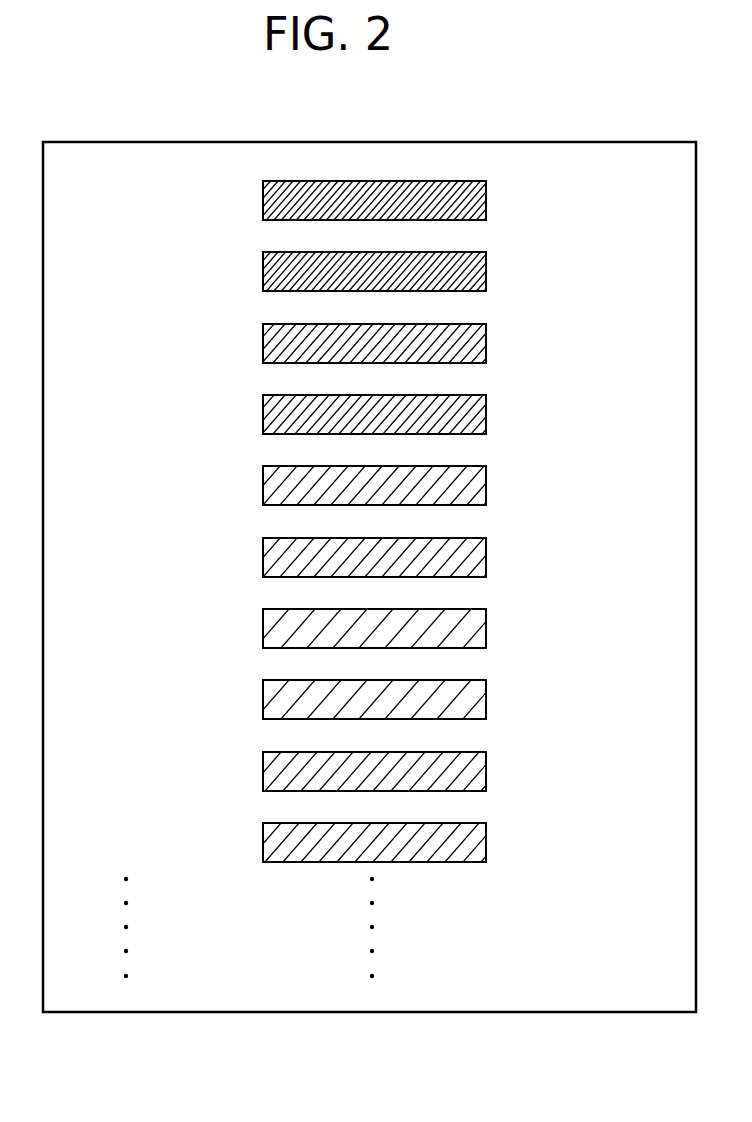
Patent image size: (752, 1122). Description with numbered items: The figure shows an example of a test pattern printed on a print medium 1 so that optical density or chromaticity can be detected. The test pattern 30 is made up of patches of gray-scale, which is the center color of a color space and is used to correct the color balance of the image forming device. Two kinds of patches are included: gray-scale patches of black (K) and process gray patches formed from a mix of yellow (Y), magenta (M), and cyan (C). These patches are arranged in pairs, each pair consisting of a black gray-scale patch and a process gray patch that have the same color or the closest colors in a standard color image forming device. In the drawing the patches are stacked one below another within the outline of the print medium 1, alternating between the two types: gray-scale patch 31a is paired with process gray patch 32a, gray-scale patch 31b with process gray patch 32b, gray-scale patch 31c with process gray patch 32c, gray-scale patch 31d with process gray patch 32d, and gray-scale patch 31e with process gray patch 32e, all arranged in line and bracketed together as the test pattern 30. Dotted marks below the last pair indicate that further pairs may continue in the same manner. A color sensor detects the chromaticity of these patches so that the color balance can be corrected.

The print medium 1 is at (607, 134).
The test pattern 30 is at (513, 863).
The gray-scale patch 31a is at (254, 201).
The gray-scale patch 31b is at (254, 344).
The gray-scale patch 31c is at (254, 486).
The gray-scale patch 31d is at (254, 629).
The gray-scale patch 31e is at (254, 772).
The process gray patch 32a is at (254, 272).
The process gray patch 32b is at (254, 415).
The process gray patch 32c is at (254, 558).
The process gray patch 32d is at (254, 700).
The process gray patch 32e is at (254, 843).